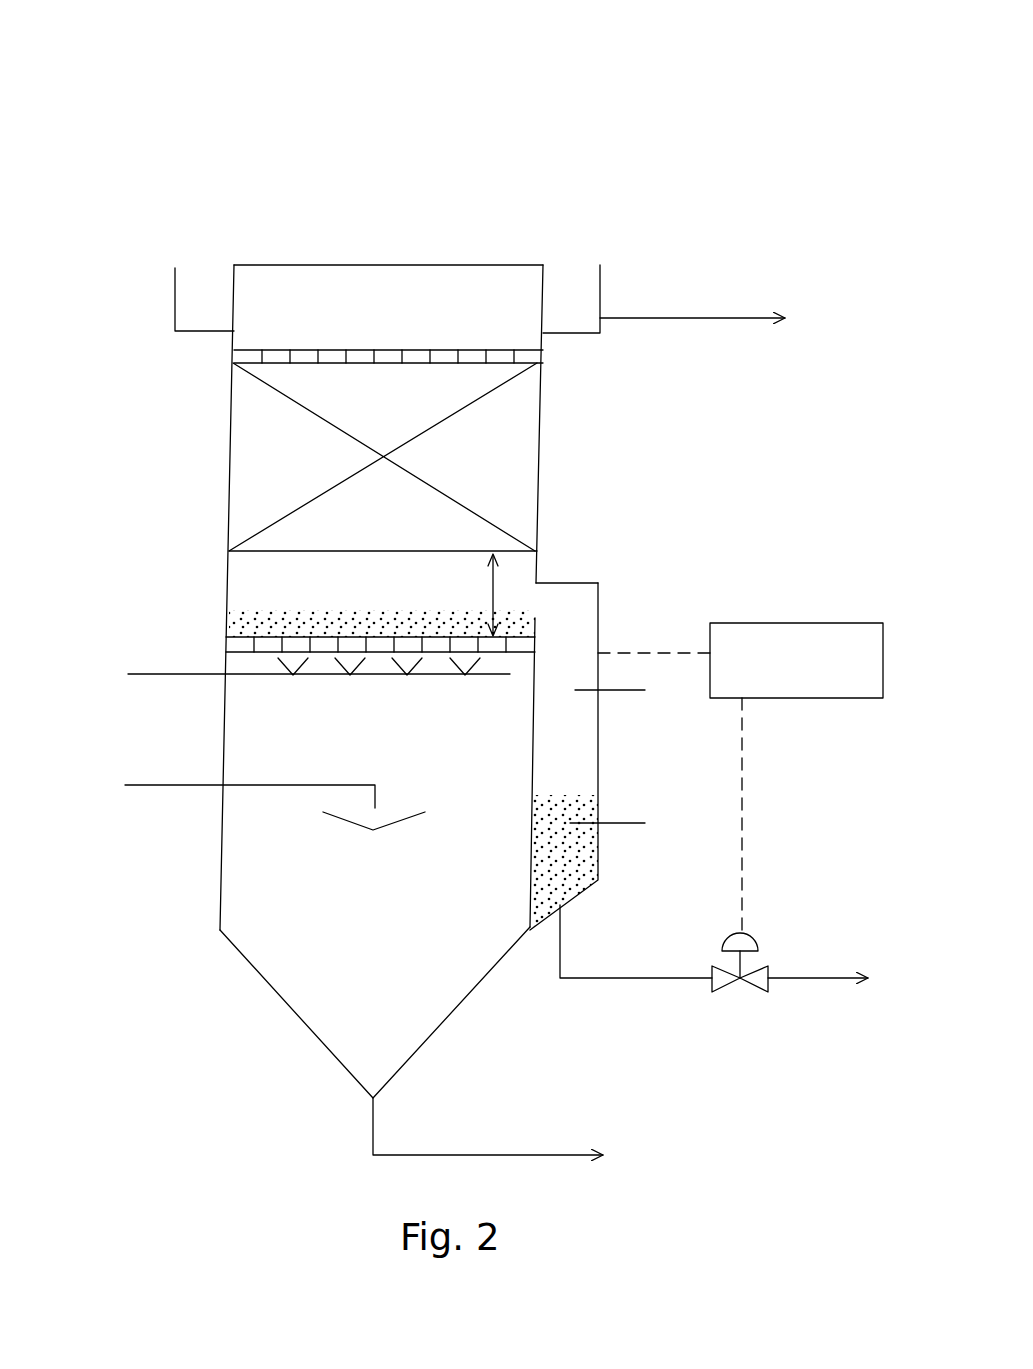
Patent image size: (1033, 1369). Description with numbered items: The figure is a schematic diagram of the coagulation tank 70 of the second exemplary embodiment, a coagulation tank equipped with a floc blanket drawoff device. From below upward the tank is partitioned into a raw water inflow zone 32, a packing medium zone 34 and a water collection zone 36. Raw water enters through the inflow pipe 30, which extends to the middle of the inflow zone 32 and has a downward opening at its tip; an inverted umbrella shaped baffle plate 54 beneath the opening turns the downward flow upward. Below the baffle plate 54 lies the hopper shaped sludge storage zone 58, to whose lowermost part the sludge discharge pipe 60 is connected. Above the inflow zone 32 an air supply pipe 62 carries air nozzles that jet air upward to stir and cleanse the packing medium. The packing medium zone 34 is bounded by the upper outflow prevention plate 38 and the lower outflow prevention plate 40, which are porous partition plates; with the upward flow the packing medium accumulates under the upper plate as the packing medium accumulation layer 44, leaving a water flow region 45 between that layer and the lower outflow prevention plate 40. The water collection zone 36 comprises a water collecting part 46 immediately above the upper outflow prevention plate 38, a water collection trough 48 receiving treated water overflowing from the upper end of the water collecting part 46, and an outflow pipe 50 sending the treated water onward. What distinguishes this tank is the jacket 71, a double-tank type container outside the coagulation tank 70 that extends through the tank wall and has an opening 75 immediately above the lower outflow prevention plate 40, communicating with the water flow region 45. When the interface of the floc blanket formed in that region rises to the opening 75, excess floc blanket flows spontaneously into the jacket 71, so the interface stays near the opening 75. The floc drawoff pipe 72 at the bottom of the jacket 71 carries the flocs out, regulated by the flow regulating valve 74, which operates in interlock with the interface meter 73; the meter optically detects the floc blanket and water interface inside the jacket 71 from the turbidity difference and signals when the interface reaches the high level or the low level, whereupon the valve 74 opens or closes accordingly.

The coagulation tank 70 is at (728, 146).
The inflow pipe 30 is at (170, 785).
The raw water inflow zone 32 is at (400, 746).
The packing medium zone 34 is at (400, 603).
The water collection zone 36 is at (420, 325).
The upper outflow prevention plate 38 is at (473, 365).
The lower outflow prevention plate 40 is at (238, 635).
The packing medium accumulation layer 44 is at (525, 477).
The water flow region 45 is at (496, 583).
The water collecting part 46 is at (488, 290).
The water collection trough 48 is at (602, 283).
The outflow pipe 50 is at (728, 318).
The baffle plate 54 is at (350, 822).
The sludge storage zone 58 is at (400, 953).
The sludge discharge pipe 60 is at (512, 1155).
The air supply pipe 62 is at (168, 672).
The jacket 71 is at (598, 755).
The floc drawoff pipe 72 is at (648, 978).
The interface meter 73 is at (790, 622).
The flow regulating valve 74 is at (752, 976).
The opening 75 is at (532, 603).